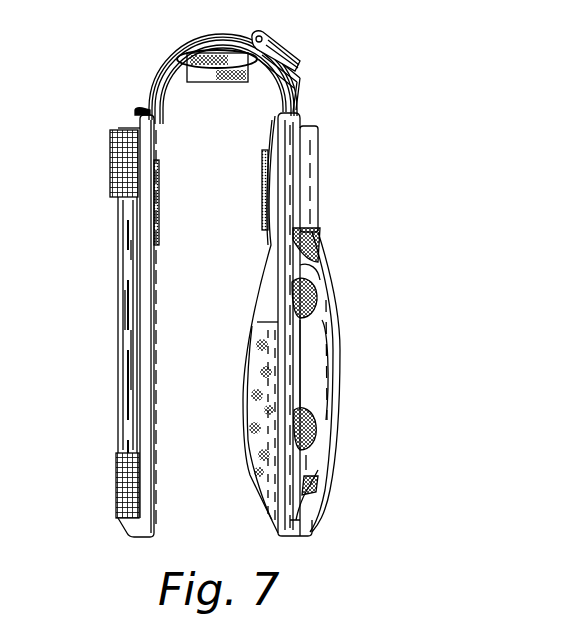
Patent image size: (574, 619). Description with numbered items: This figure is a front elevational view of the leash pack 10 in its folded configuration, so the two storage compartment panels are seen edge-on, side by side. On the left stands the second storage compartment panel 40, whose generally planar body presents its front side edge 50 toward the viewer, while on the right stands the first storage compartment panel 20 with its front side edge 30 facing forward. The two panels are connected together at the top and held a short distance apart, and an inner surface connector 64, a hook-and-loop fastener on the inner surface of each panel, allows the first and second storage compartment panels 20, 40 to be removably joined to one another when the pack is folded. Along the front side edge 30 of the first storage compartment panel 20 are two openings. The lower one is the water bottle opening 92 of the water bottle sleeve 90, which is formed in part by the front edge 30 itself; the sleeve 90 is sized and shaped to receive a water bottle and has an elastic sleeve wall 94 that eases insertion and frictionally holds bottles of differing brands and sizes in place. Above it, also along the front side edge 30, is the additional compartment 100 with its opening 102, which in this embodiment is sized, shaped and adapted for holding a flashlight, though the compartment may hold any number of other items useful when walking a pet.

The leash pack 10 is at (384, 68).
The first storage compartment panel 20 is at (303, 213).
The front side edge 30 is at (292, 525).
The second storage compartment panel 40 is at (127, 250).
The front side edge 50 is at (145, 485).
The inner surface connector 64 is at (263, 186).
The water bottle sleeve 90 is at (263, 443).
The water bottle opening 92 is at (263, 443).
The sleeve wall 94 is at (250, 332).
The additional compartment 100 is at (275, 156).
The opening 102 is at (275, 156).